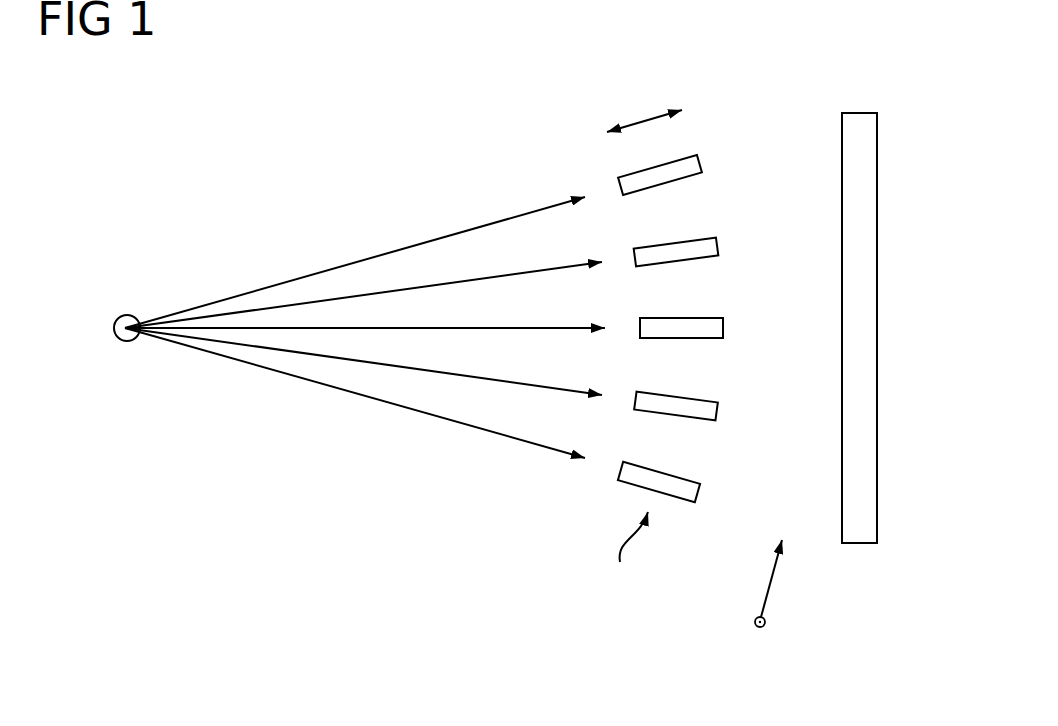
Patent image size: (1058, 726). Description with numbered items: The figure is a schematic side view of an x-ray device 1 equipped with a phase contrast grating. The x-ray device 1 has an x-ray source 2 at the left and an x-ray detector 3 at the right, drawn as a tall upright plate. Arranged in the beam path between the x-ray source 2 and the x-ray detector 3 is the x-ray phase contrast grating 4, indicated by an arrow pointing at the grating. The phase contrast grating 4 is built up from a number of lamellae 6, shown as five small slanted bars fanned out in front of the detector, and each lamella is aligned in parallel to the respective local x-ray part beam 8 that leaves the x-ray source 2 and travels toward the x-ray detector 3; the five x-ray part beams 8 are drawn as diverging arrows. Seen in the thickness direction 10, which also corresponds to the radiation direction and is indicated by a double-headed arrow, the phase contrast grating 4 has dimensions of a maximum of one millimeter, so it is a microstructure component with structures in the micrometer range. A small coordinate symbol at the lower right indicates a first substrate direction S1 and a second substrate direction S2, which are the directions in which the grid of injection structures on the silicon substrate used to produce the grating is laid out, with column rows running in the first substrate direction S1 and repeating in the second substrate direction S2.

The x-ray device 1 is at (190, 178).
The x-ray source 2 is at (128, 342).
The x-ray detector 3 is at (877, 297).
The phase contrast grating 4 is at (629, 553).
The lamellae 6 is at (702, 163).
The x-ray part beam 8 is at (260, 308).
The thickness direction 10 is at (640, 122).
The first substrate direction S1 is at (766, 622).
The second substrate direction S2 is at (772, 585).